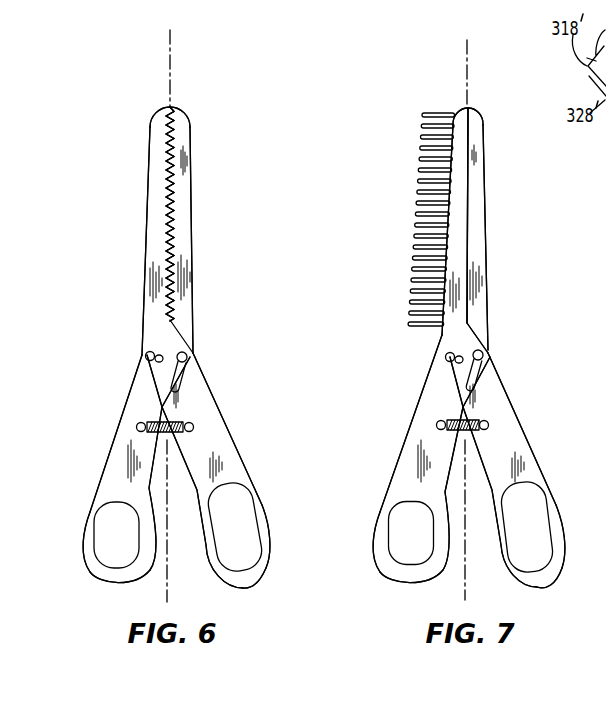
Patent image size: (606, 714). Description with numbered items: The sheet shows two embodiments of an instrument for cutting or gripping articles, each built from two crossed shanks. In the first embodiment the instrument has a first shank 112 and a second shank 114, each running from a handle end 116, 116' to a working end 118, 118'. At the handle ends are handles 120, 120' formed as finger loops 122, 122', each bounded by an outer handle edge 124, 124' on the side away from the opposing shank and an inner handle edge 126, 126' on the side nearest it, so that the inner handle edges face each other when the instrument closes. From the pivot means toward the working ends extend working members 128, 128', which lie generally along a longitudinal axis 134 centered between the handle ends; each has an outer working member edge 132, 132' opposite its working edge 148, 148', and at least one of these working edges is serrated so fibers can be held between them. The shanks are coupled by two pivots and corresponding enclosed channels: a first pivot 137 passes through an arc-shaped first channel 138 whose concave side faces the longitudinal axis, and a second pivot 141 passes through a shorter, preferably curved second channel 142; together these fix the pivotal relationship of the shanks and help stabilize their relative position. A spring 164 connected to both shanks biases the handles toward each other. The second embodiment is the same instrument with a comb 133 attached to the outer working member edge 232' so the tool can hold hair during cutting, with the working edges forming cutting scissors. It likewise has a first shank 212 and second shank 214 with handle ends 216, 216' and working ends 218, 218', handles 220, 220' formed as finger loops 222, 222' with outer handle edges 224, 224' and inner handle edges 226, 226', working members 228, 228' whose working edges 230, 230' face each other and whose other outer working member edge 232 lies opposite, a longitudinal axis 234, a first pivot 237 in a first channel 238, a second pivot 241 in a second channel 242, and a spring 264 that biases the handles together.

In FIG. 6, the first shank 112 is at (114, 430).
In FIG. 6, the second shank 114 is at (230, 418).
In FIG. 6, the handle end 116 is at (112, 592).
In FIG. 6, the handle end 116' is at (269, 591).
In FIG. 6, the working end 118 is at (204, 104).
In FIG. 6, the working end 118' is at (139, 100).
In FIG. 6, the handle 120 is at (69, 543).
In FIG. 6, the handle 120' is at (287, 536).
In FIG. 6, the finger loop 122 is at (116, 535).
In FIG. 6, the finger loop 122' is at (235, 527).
In FIG. 6, the outer handle edge 124 is at (100, 433).
In FIG. 6, the outer handle edge 124' is at (252, 429).
In FIG. 6, the inner handle edge 126 is at (157, 485).
In FIG. 6, the inner handle edge 126' is at (195, 471).
In FIG. 6, the working member 128 is at (204, 257).
In FIG. 6, the working member 128' is at (134, 231).
In FIG. 6, the outer working member edge 132 is at (214, 240).
In FIG. 6, the outer working member edge 132' is at (122, 241).
In FIG. 6, the longitudinal axis 134 is at (172, 52).
In FIG. 6, the first pivot 137 is at (187, 354).
In FIG. 6, the first channel 138 is at (181, 389).
In FIG. 6, the second pivot 141 is at (146, 359).
In FIG. 6, the second channel 142 is at (158, 365).
In FIG. 6, the working edge 148 is at (204, 214).
In FIG. 6, the working edge 148' is at (132, 214).
In FIG. 6, the spring 164 is at (192, 447).
In FIG. 7, the comb 133 is at (432, 114).
In FIG. 7, the first shank 212 is at (395, 452).
In FIG. 7, the second shank 214 is at (523, 418).
In FIG. 7, the handle end 216 is at (403, 592).
In FIG. 7, the handle end 216' is at (549, 578).
In FIG. 7, the working end 218 is at (493, 103).
In FIG. 7, the working end 218' is at (442, 85).
In FIG. 7, the handle 220 is at (357, 542).
In FIG. 7, the handle 220' is at (579, 533).
In FIG. 7, the finger loop 222 is at (411, 533).
In FIG. 7, the finger loop 222' is at (527, 527).
In FIG. 7, the outer handle edge 224 is at (393, 423).
In FIG. 7, the outer handle edge 224' is at (547, 429).
In FIG. 7, the inner handle edge 226 is at (493, 472).
In FIG. 7, the inner handle edge 226' is at (454, 486).
In FIG. 7, the working member 228 is at (499, 258).
In FIG. 7, the working member 228' is at (486, 221).
In FIG. 7, the working edge 230 is at (492, 230).
In FIG. 7, the working edge 230' is at (406, 215).
In FIG. 7, the outer working member edge 232 is at (509, 237).
In FIG. 7, the outer working member edge 232' is at (412, 241).
In FIG. 7, the longitudinal axis 234 is at (468, 48).
In FIG. 7, the first pivot 237 is at (483, 352).
In FIG. 7, the first channel 238 is at (476, 387).
In FIG. 7, the second pivot 241 is at (446, 361).
In FIG. 7, the second channel 242 is at (455, 368).
In FIG. 7, the spring 264 is at (487, 447).